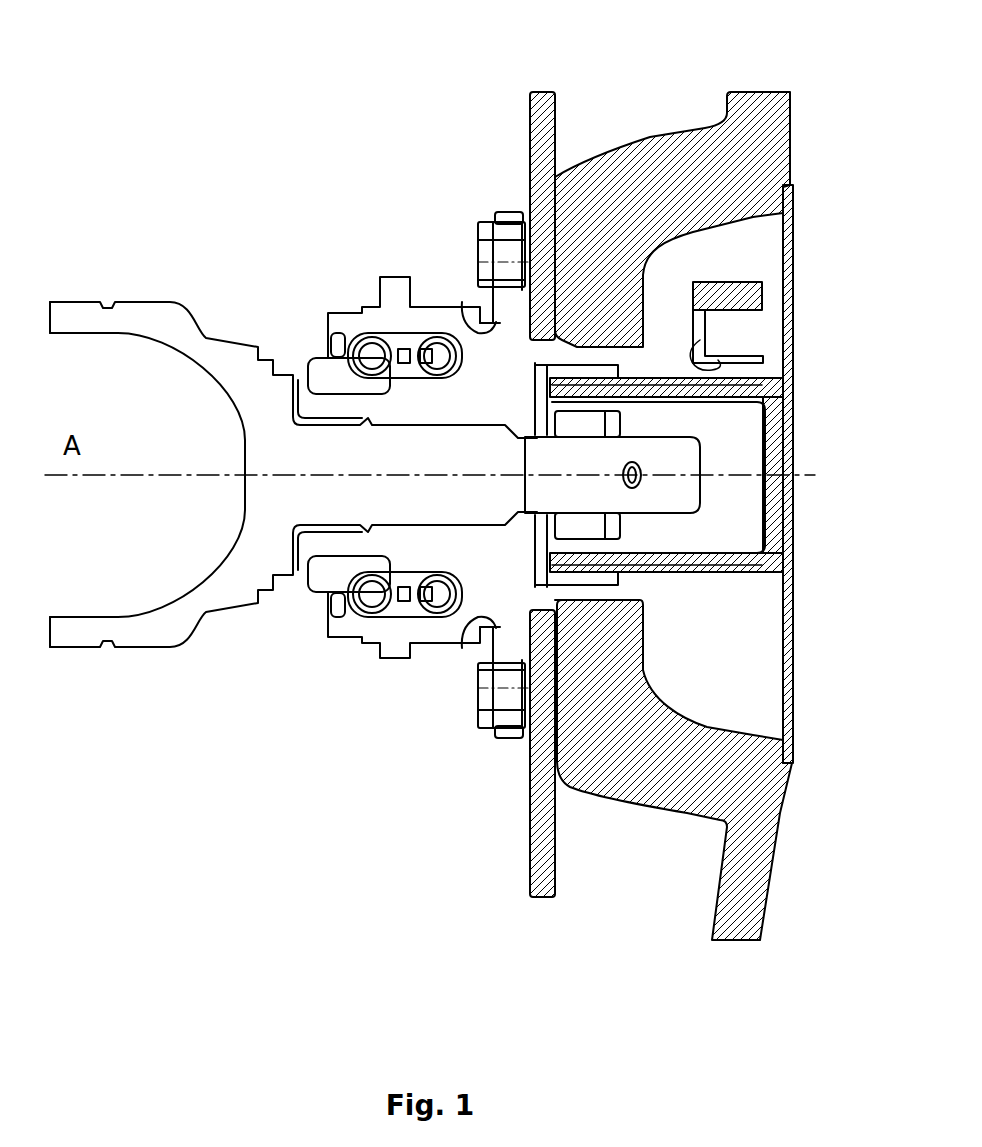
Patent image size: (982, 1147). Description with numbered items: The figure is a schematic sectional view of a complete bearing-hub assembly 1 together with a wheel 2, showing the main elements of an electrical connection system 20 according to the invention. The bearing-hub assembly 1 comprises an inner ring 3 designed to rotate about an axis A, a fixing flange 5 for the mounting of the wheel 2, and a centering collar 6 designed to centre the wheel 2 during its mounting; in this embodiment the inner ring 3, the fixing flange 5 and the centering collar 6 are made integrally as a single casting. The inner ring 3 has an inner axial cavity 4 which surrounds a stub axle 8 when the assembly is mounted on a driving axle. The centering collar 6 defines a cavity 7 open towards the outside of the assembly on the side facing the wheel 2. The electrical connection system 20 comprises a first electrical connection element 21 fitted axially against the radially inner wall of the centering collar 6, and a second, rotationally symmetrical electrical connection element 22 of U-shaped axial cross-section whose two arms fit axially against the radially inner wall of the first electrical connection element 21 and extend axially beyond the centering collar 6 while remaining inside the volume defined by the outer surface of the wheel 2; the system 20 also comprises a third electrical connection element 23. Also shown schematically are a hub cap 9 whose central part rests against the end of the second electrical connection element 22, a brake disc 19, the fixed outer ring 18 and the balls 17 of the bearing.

The bearing-hub assembly 1 is at (420, 210).
The wheel 2 is at (633, 183).
The inner ring 3 is at (410, 392).
The inner axial cavity 4 is at (515, 425).
The fixing flange 5 is at (505, 220).
The centering collar 6 is at (530, 623).
The cavity 7 is at (600, 403).
The stub axle 8 is at (650, 494).
The hub cap 9 is at (788, 343).
The balls 17 is at (332, 610).
The fixed outer ring 18 is at (385, 628).
The brake disc 19 is at (540, 113).
The electrical connection system 20 is at (697, 592).
The first electrical connection element 21 is at (600, 577).
The second electrical connection element 22 is at (727, 553).
The third electrical connection element 23 is at (760, 285).